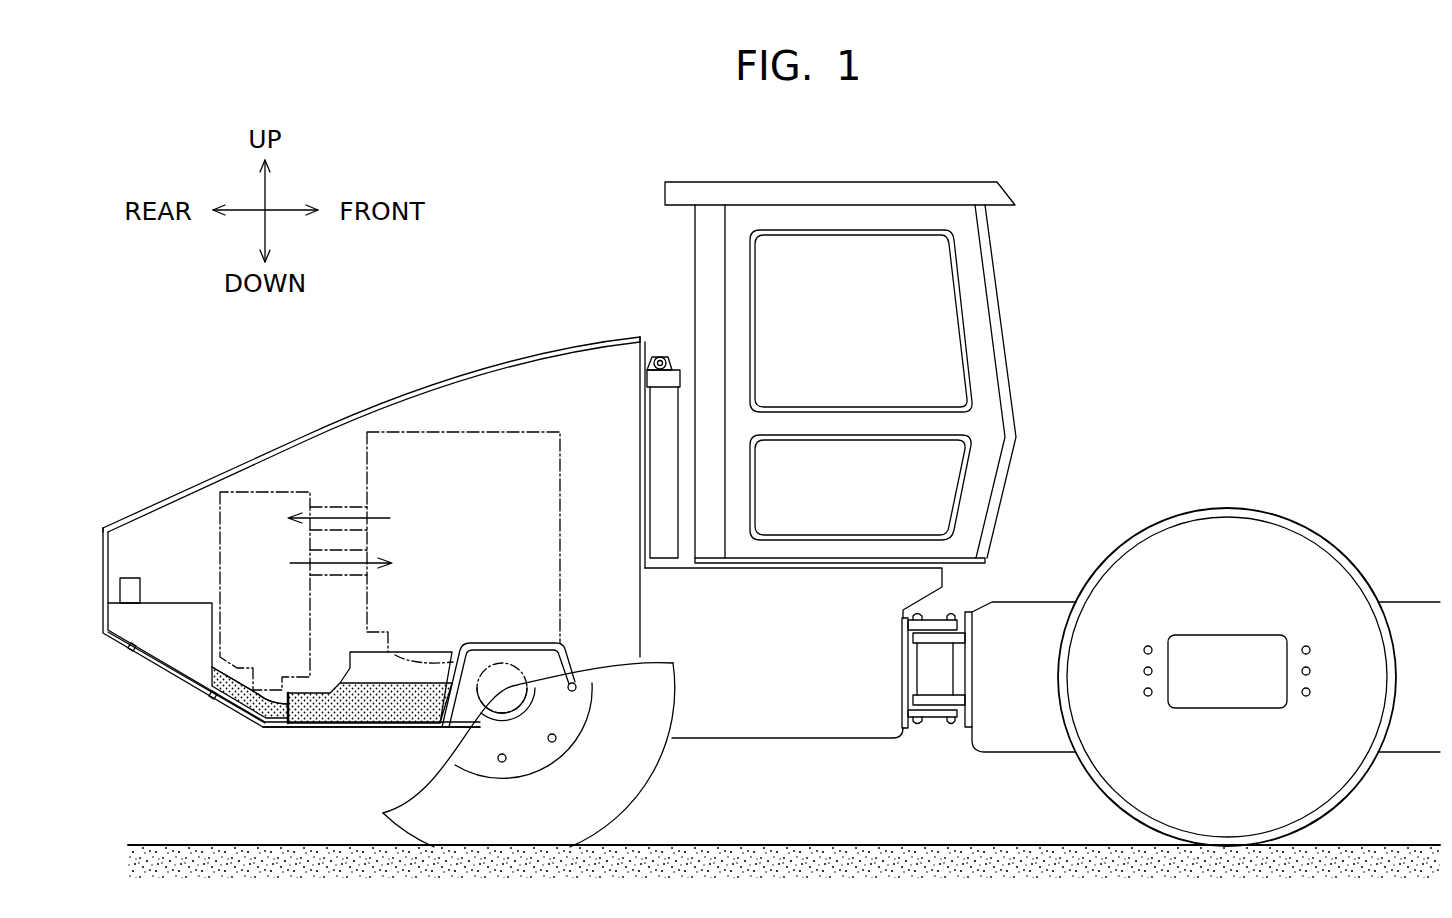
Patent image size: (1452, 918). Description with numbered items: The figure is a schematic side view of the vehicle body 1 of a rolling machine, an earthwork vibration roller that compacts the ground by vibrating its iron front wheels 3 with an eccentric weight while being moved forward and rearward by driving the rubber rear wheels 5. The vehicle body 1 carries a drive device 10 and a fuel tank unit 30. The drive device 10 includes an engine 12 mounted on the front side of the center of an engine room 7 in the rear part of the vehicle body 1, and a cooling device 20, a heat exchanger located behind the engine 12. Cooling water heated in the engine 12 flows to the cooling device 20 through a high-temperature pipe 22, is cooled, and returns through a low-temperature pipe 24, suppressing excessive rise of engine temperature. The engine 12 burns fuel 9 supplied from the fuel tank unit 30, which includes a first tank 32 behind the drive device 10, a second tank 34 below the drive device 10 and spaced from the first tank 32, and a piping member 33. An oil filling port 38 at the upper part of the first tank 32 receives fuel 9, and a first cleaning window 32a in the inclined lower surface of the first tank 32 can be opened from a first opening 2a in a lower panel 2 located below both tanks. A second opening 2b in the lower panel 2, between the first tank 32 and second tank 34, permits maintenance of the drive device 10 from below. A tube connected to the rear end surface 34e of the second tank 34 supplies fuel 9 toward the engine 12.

The vehicle body 1 is at (1225, 288).
The lower panel 2 is at (123, 652).
The first opening 2a is at (132, 648).
The second opening 2b is at (222, 698).
The front wheels 3 is at (1253, 526).
The rear wheels 5 is at (622, 792).
The engine room 7 is at (418, 382).
The fuel 9 is at (423, 715).
The drive device 10 is at (578, 420).
The engine 12 is at (556, 531).
The cooling device 20 is at (268, 503).
The high-temperature pipe 22 is at (337, 510).
The low-temperature pipe 24 is at (340, 578).
The fuel tank unit 30 is at (192, 535).
The first tank 32 is at (197, 675).
The first cleaning window 32a is at (160, 666).
The piping member 33 is at (270, 730).
The second tank 34 is at (385, 718).
The rear end surface 34e is at (290, 723).
The oil filling port 38 is at (133, 578).